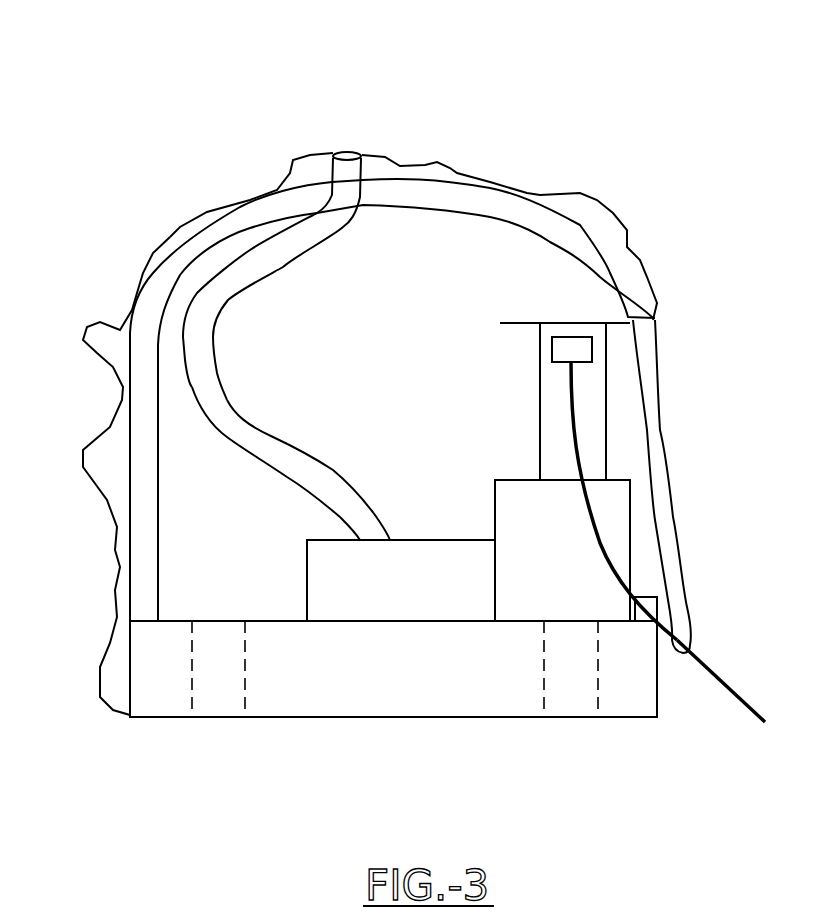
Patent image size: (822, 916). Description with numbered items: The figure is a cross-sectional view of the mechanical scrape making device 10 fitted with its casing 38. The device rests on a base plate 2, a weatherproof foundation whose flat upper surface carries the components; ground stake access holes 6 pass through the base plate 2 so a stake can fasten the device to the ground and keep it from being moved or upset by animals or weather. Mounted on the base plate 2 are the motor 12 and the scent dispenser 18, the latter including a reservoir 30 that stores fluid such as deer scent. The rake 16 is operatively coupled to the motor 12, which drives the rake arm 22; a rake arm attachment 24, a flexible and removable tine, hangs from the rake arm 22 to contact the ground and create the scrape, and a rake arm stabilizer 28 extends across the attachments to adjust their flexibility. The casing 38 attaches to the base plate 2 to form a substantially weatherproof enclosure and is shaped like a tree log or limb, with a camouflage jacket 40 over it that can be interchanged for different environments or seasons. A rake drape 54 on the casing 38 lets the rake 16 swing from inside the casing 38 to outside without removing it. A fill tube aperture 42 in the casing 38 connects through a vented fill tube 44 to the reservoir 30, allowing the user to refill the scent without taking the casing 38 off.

The base plate 2 is at (398, 687).
The ground stake access hole 6 is at (217, 703).
The mechanical scrape making device 10 is at (549, 101).
The motor 12 is at (623, 492).
The rake 16 is at (584, 386).
The scent dispenser 18 is at (322, 525).
The rake arm 22 is at (578, 348).
The rake arm attachment 24 is at (697, 655).
The rake arm stabilizer 28 is at (650, 605).
The reservoir 30 is at (317, 580).
The casing 38 is at (108, 594).
The camouflage jacket 40 is at (607, 215).
The fill tube aperture 42 is at (364, 155).
The vented fill tube 44 is at (213, 388).
The rake drape 54 is at (653, 423).